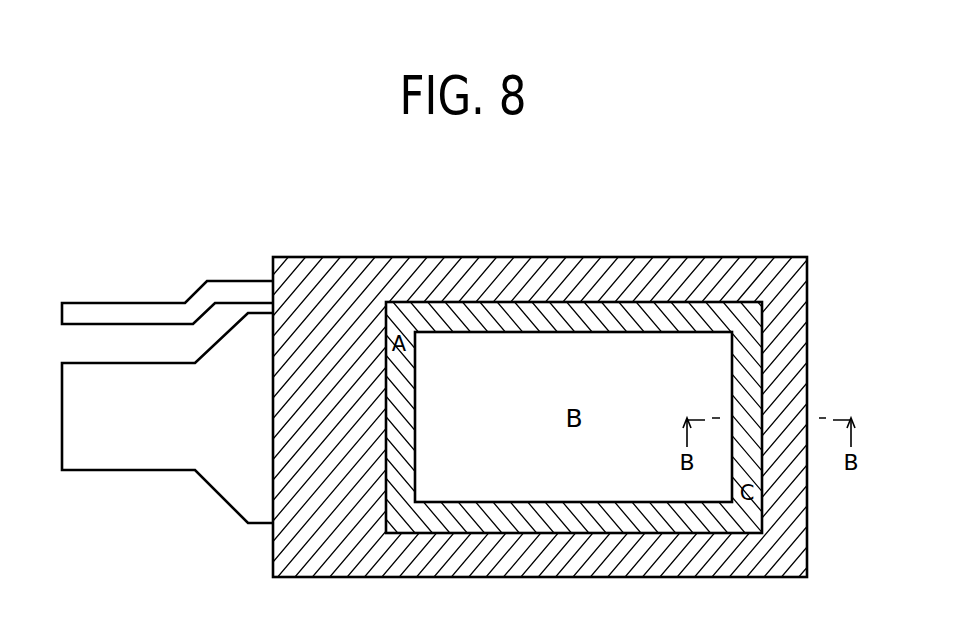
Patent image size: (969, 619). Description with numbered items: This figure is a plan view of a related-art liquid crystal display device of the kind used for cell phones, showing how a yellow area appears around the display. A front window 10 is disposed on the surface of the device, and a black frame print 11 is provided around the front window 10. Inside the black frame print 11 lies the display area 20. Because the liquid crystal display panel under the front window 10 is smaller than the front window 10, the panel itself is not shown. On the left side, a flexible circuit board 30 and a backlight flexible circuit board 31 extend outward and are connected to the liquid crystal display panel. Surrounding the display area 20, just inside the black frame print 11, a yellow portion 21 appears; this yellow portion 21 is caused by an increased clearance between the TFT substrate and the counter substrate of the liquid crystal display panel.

The front window 10 is at (808, 320).
The black frame print 11 is at (680, 279).
The display area 20 is at (516, 369).
The yellow portion 21 is at (602, 316).
The flexible circuit board 30 is at (125, 471).
The backlight flexible circuit board 31 is at (124, 300).